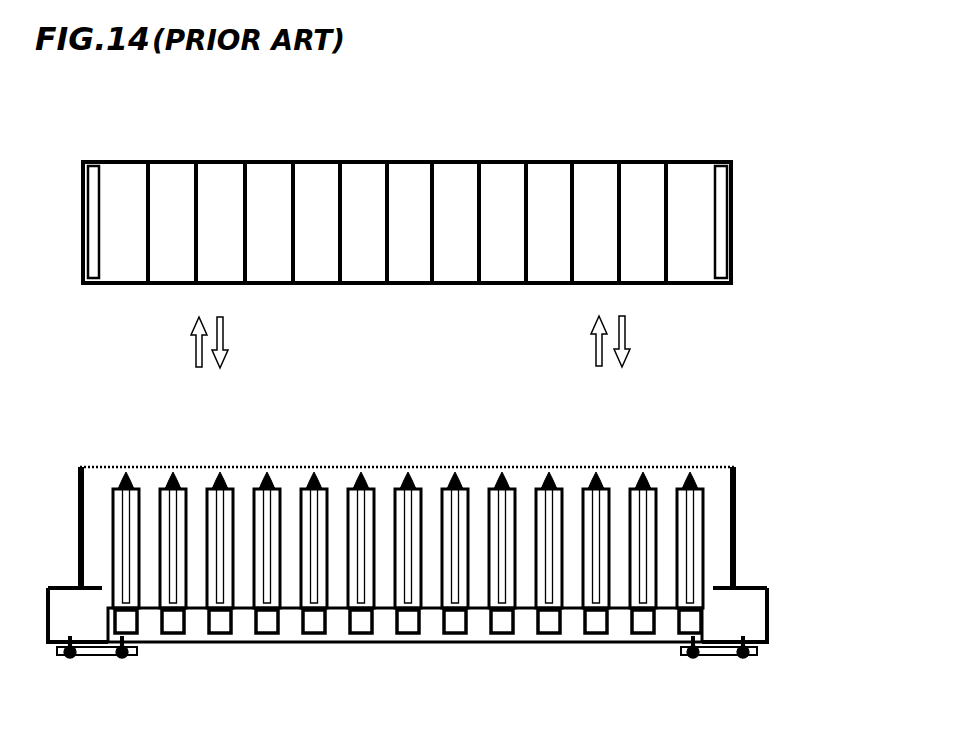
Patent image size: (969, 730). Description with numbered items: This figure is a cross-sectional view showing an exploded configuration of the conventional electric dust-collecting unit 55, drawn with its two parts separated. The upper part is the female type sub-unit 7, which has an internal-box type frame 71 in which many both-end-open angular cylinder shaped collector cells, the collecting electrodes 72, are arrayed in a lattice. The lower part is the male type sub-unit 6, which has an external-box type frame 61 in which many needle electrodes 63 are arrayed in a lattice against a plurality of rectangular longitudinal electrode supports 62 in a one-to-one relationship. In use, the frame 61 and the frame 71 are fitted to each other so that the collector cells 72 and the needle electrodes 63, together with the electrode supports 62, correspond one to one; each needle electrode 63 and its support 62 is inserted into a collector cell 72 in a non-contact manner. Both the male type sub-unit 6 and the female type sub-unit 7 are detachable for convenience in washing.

The female type sub-unit 7 is at (376, 183).
The internal-box type frame 71 is at (83, 230).
The collecting electrodes 72 is at (481, 218).
The male type sub-unit 6 is at (393, 523).
The external-box type frame 61 is at (80, 560).
The rectangular longitudinal electrode supports 62 is at (350, 495).
The needle electrodes 63 is at (363, 478).
The electric dust-collecting unit 55 is at (695, 392).